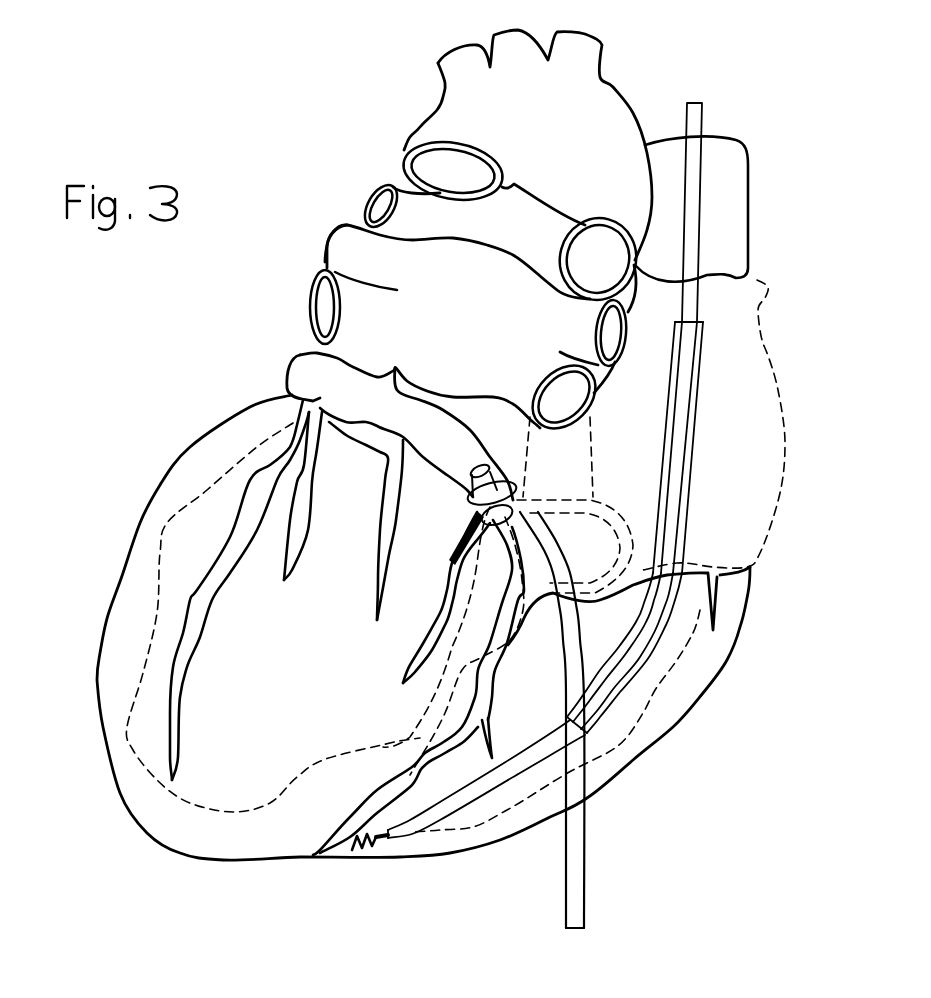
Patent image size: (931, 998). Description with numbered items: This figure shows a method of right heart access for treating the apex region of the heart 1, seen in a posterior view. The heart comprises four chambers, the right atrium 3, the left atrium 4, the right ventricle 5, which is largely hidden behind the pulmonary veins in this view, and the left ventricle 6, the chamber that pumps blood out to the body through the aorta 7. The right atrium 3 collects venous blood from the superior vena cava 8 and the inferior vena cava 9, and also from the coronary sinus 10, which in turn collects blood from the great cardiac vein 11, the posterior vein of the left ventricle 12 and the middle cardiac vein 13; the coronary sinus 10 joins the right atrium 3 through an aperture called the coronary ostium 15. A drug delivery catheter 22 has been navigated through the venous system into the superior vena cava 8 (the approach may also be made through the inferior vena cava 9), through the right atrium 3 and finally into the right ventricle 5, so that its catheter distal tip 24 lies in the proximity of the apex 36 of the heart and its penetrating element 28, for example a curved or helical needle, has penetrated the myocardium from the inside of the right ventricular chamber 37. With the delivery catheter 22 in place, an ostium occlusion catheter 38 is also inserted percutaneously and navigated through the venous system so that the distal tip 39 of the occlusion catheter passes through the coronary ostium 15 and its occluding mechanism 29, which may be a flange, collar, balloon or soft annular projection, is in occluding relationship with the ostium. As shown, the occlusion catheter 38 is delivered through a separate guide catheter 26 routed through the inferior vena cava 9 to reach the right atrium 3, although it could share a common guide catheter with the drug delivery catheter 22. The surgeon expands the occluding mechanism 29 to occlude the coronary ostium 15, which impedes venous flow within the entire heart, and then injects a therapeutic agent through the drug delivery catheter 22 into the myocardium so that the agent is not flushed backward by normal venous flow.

The heart 1 is at (700, 767).
The right atrium 3 is at (750, 479).
The left atrium 4 is at (452, 402).
The right ventricle 5 is at (682, 708).
The left ventricle 6 is at (120, 577).
The aorta 7 is at (438, 97).
The superior vena cava 8 is at (752, 160).
The inferior vena cava 9 is at (620, 580).
The coronary sinus 10 is at (400, 437).
The great cardiac vein 11 is at (290, 362).
The posterior vein of the left ventricle 12 is at (163, 700).
The middle cardiac vein 13 is at (523, 637).
The coronary ostium 15 is at (498, 532).
The drug delivery catheter 22 is at (440, 823).
The catheter distal tip 24 is at (390, 840).
The guide catheter 26 is at (700, 407).
The penetrating element 28 is at (350, 853).
The occluding mechanism 29 is at (485, 532).
The apex 36 is at (212, 775).
The right ventricular chamber 37 is at (495, 822).
The ostium occlusion catheter 38 is at (585, 865).
The distal tip of the occlusion catheter 39 is at (470, 480).